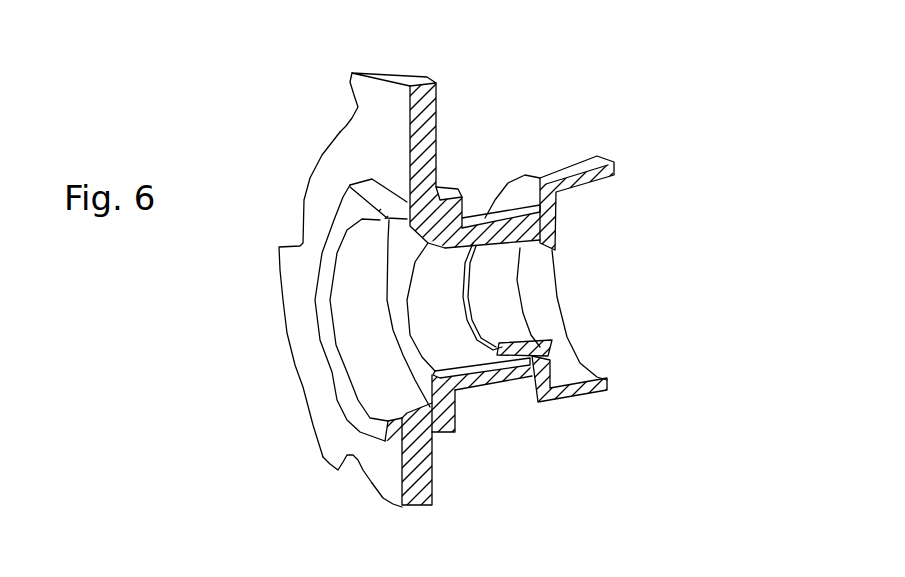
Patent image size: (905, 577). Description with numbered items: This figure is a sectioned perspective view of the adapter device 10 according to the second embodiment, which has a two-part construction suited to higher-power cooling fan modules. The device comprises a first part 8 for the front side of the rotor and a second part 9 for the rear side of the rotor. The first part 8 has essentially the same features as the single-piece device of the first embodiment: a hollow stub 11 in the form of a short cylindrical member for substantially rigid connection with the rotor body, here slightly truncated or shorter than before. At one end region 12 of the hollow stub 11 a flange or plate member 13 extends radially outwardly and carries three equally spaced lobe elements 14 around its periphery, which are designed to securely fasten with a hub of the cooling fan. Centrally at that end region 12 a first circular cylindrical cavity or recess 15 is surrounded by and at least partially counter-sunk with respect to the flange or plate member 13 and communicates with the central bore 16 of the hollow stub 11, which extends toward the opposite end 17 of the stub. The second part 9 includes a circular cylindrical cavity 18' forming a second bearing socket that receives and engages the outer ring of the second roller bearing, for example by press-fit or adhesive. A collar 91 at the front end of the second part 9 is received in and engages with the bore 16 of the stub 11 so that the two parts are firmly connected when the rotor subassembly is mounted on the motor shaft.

The first part 8 is at (317, 120).
The second part 9 is at (582, 418).
The adapter device 10 is at (623, 62).
The hollow stub 11 is at (478, 388).
The end region 12 is at (455, 180).
The flange or plate member 13 is at (428, 118).
The lobe elements 14 is at (373, 88).
The first circular cylindrical cavity or recess 15 is at (347, 301).
The central bore 16 is at (456, 320).
The opposite end 17 is at (518, 175).
The circular cylindrical cavity 18' is at (452, 290).
The collar 91 is at (508, 348).